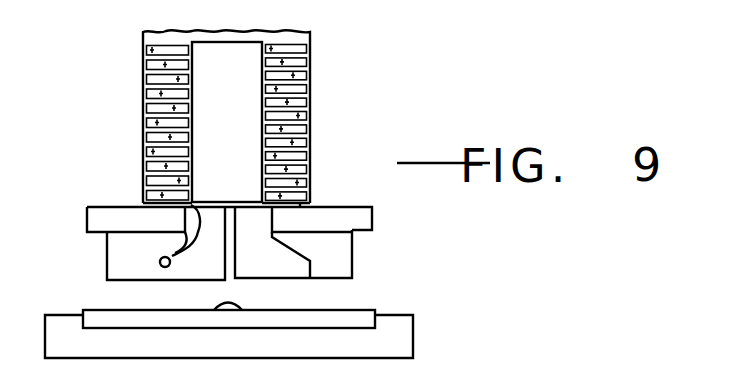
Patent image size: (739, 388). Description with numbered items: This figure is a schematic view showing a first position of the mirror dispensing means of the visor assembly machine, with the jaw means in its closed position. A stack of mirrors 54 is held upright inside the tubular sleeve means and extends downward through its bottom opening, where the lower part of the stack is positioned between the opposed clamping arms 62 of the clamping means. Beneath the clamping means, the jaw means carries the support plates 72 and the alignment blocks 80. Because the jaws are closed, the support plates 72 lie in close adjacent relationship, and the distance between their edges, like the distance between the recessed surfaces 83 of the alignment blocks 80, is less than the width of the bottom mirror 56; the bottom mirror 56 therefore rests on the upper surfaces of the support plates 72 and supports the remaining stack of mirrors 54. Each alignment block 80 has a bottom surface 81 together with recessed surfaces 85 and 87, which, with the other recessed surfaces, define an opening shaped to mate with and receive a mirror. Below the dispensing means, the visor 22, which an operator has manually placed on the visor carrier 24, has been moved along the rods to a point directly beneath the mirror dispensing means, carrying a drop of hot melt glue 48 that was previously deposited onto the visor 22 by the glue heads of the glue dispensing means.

The stack of mirrors 54 is at (150, 64).
The clamping arm 62 is at (240, 72).
The recessed surface 83 is at (193, 207).
The bottom mirror 56 is at (303, 203).
The support plate 72 is at (347, 220).
The alignment block 80 is at (353, 247).
The recessed surface 85 is at (88, 230).
The recessed surface 87 is at (160, 266).
The bottom surface 81 is at (126, 280).
The hot melt glue 48 is at (234, 301).
The visor 22 is at (357, 310).
The visor carrier 24 is at (395, 335).